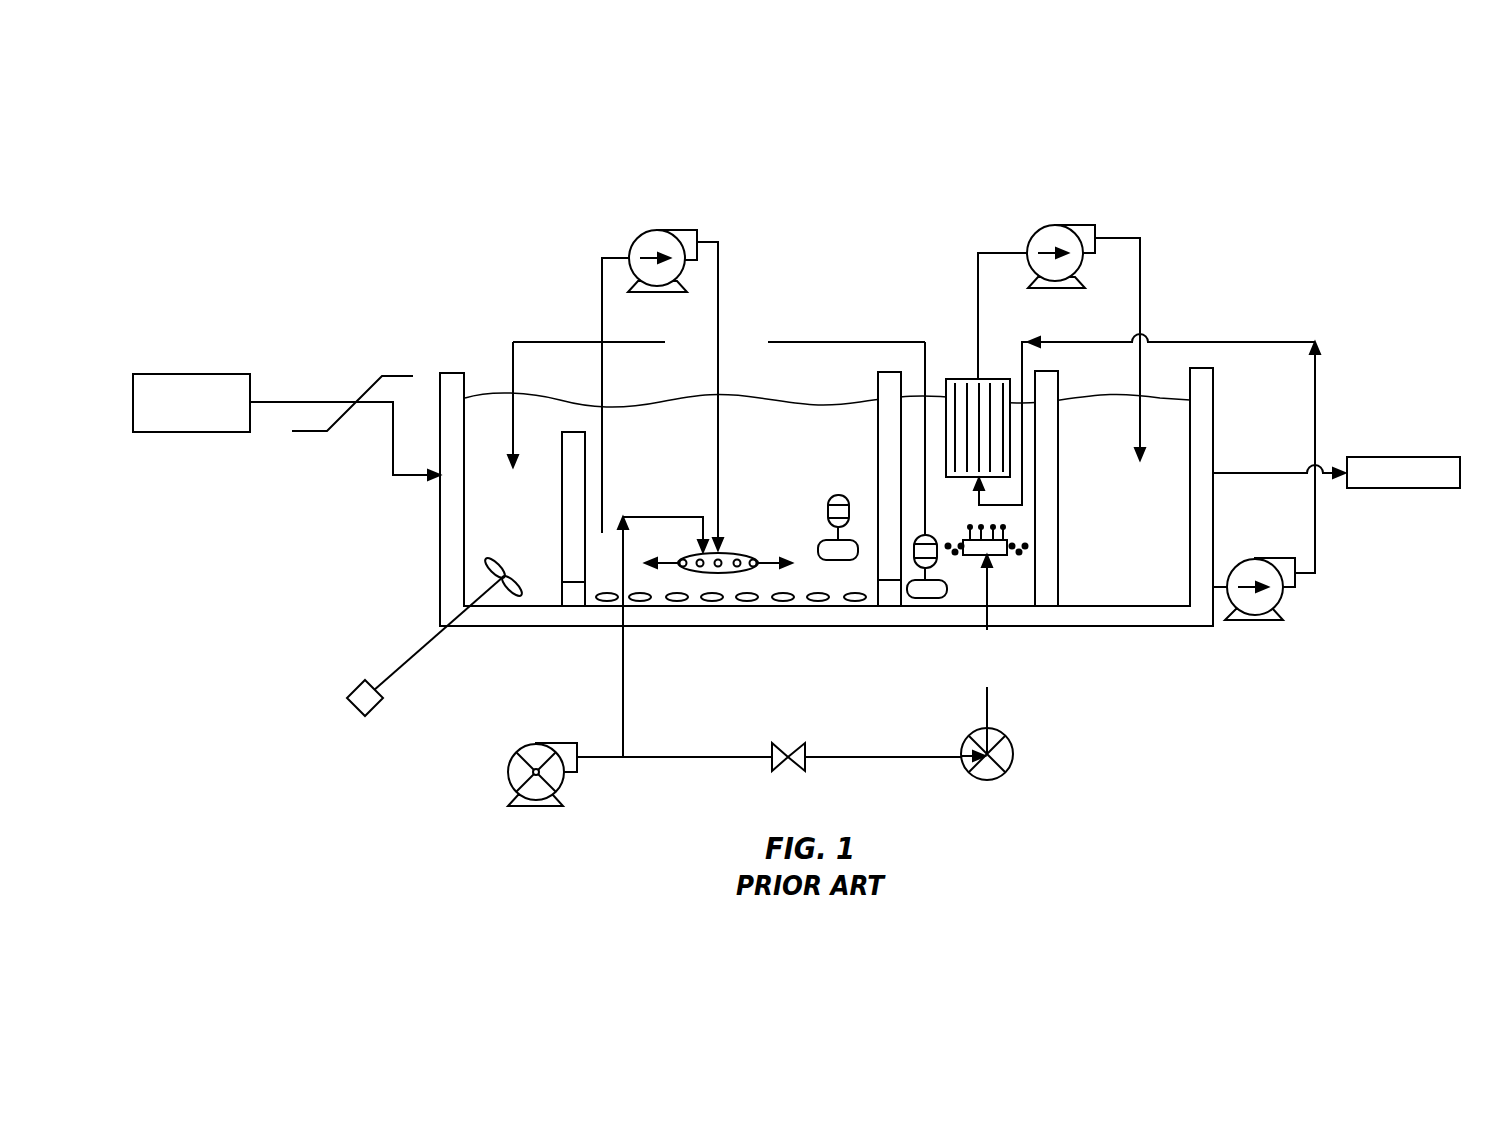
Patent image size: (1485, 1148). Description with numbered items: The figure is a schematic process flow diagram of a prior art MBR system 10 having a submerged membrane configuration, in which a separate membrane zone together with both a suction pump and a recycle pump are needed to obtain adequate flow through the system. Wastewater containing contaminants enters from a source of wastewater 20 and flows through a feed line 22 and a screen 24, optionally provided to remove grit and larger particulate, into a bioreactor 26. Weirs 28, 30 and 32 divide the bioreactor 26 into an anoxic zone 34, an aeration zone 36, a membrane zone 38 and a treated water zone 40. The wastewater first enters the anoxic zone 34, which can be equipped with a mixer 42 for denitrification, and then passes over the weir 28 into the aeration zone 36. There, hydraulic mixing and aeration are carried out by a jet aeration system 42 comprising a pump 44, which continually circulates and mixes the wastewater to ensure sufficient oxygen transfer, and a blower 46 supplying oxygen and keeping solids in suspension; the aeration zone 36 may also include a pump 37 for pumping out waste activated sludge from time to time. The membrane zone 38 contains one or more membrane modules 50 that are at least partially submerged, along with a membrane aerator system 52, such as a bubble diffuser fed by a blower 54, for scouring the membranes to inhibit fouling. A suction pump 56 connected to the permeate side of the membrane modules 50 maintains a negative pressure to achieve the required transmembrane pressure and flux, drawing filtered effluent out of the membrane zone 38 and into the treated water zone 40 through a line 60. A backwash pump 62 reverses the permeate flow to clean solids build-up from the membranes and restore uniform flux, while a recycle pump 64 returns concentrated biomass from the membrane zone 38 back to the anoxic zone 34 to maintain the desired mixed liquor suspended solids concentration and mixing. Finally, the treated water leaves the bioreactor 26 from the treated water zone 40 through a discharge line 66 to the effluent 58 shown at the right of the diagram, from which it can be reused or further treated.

The MBR system 10 is at (1216, 166).
The source of wastewater 20 is at (193, 374).
The feed line 22 is at (268, 406).
The screen 24 is at (366, 391).
The bioreactor 26 is at (430, 515).
The weir 28 is at (572, 596).
The weir 30 is at (890, 596).
The weir 32 is at (1013, 578).
The anoxic zone 34 is at (478, 572).
The aeration zone 36 is at (663, 583).
The pump 37 is at (858, 500).
The membrane zone 38 is at (1047, 589).
The treated water zone 40 is at (1153, 580).
The mixer / jet aeration system 42 is at (400, 666).
The pump 44 is at (677, 230).
The blower 46 is at (520, 806).
The membrane modules 50 is at (965, 379).
The membrane aerator system 52 is at (1008, 540).
The blower 54 is at (1012, 760).
The suction pump 56 is at (1080, 225).
The effluent 58 is at (1413, 457).
The line 60 is at (1142, 270).
The backwash pump 62 is at (1278, 558).
The recycle pump 64 is at (931, 536).
The discharge line 66 is at (1292, 473).